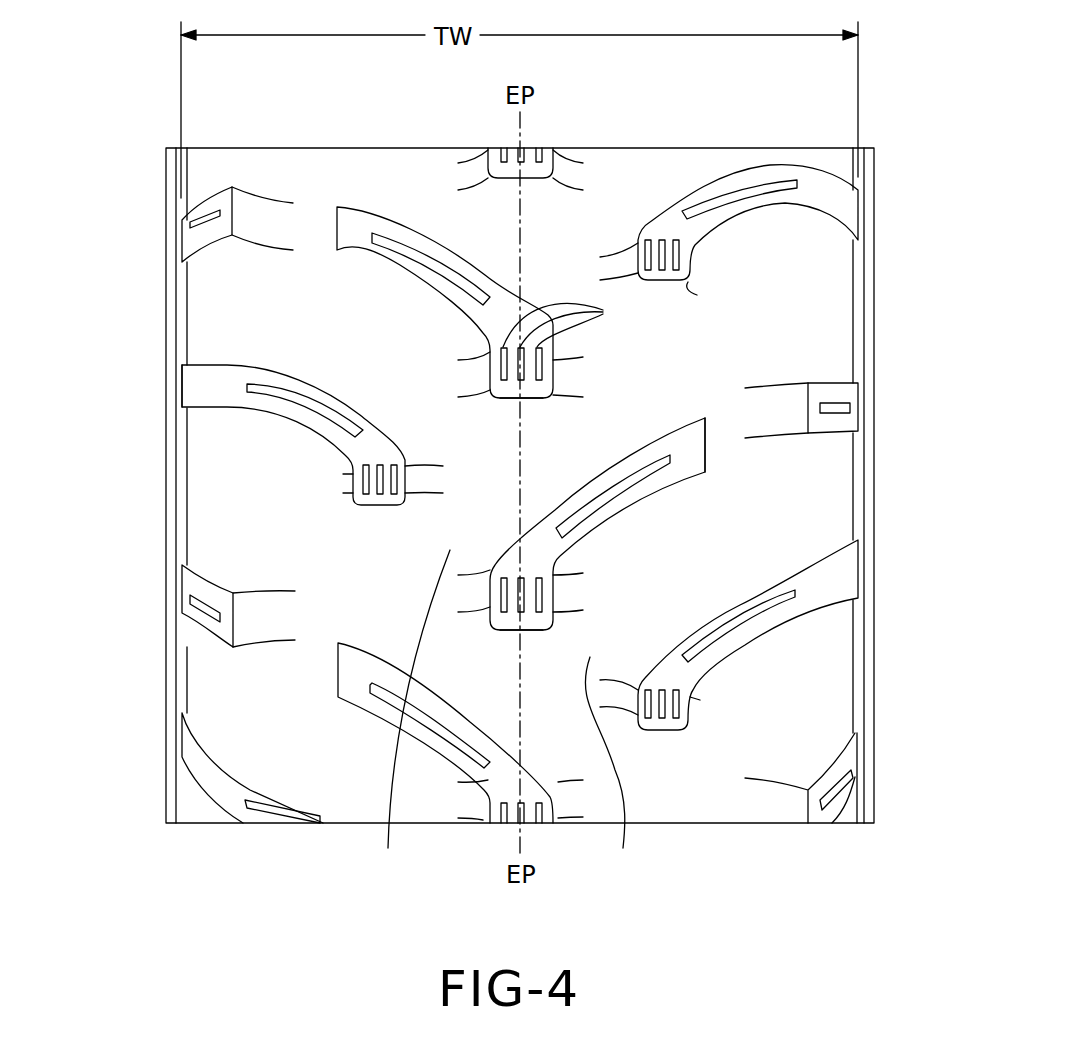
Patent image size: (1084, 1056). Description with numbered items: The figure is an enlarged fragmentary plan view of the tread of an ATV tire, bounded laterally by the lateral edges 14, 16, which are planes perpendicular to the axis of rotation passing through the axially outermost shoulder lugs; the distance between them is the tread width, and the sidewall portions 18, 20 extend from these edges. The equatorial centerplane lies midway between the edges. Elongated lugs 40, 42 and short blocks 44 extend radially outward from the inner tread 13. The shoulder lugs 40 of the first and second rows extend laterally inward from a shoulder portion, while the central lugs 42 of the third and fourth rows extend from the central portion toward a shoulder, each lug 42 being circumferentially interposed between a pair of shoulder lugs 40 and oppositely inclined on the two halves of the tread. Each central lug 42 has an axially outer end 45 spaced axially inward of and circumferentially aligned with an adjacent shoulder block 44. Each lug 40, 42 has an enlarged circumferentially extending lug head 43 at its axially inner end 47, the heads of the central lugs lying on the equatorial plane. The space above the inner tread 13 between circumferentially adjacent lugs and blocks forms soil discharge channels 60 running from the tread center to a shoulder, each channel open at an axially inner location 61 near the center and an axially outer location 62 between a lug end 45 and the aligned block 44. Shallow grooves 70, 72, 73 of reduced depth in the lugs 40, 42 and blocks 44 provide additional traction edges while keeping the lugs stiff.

The inner tread 13 is at (217, 337).
The lateral edge 14 is at (181, 95).
The lateral edge 16 is at (858, 90).
The sidewall portion 18 is at (875, 307).
The sidewall portion 20 is at (167, 484).
The elongated lug 40 is at (302, 417).
The elongated lug 42 is at (350, 240).
The lug head 43 is at (553, 377).
The short block 44 is at (268, 123).
The axially outer end 45 is at (182, 378).
The axially inner end 47 is at (503, 400).
The soil discharge channel 60 is at (414, 387).
The axially inner location 61 is at (507, 715).
The axially outer location 62 is at (310, 638).
The shallow groove 70 is at (410, 252).
The shallow groove 72 is at (237, 161).
The shallow groove 73 is at (571, 322).